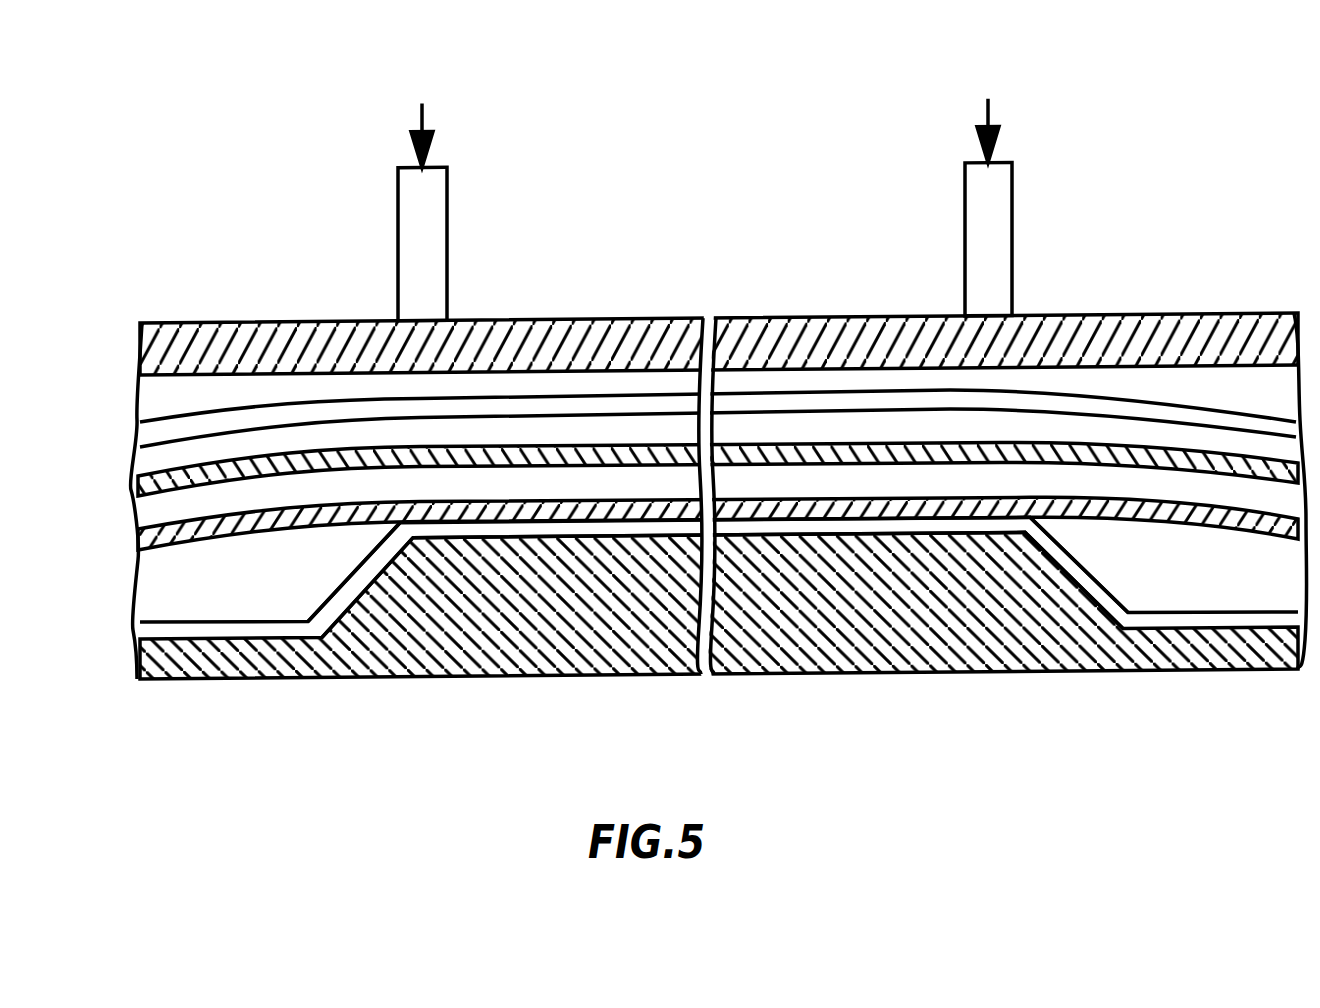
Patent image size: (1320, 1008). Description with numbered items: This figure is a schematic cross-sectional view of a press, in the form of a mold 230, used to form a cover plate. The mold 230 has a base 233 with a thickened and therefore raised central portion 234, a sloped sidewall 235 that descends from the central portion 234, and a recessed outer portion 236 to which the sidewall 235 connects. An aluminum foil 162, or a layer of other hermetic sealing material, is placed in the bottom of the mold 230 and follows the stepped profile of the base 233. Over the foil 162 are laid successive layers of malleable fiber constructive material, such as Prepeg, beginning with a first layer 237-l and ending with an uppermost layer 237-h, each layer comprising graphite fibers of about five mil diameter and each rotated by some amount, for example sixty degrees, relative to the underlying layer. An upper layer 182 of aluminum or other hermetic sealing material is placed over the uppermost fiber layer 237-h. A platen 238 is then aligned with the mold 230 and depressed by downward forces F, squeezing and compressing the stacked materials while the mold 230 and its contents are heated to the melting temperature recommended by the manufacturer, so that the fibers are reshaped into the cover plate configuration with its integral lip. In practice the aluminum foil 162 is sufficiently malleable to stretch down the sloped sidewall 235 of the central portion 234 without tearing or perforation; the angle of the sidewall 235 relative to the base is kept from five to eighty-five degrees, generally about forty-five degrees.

The mold 230 is at (160, 234).
The platen 238 is at (542, 284).
The upper layer of aluminum 182 is at (152, 422).
The uppermost layer of malleable fiber constructive material 237-h is at (140, 486).
The first layer of malleable fiber constructive material 237-l is at (207, 528).
The base 233 is at (688, 659).
The central portion 234 is at (613, 660).
The sloped sidewall 235 is at (465, 580).
The recessed outer portion 236 is at (333, 614).
The aluminum foil 162 is at (222, 632).